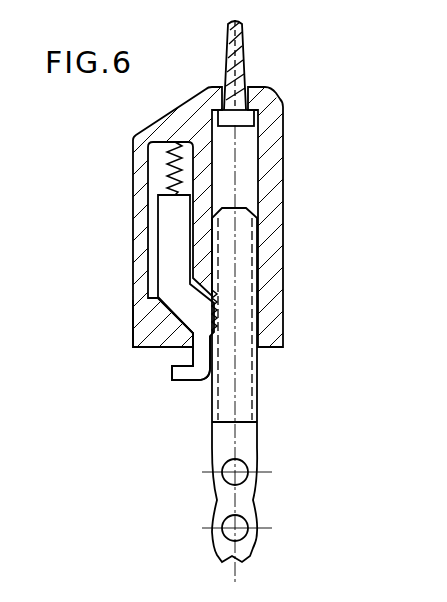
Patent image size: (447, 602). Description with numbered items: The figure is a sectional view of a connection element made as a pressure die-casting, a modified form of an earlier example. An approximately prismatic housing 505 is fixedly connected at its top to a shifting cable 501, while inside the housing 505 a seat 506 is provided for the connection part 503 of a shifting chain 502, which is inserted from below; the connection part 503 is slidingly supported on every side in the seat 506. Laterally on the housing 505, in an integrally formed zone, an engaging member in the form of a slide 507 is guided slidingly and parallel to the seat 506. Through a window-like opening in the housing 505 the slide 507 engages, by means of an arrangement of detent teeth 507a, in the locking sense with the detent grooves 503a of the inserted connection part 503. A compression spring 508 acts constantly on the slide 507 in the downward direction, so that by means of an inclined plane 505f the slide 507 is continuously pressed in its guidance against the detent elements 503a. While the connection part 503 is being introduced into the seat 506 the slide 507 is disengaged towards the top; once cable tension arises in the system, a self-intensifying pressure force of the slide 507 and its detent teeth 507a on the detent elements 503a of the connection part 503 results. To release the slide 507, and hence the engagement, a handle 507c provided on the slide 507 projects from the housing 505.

The shifting cable 501 is at (244, 55).
The shifting chain 502 is at (242, 501).
The connection part 503 is at (245, 382).
The detent grooves 503a is at (213, 403).
The housing 505 is at (272, 115).
The inclined plane 505f is at (137, 347).
The seat 506 is at (250, 170).
The slide 507 is at (177, 257).
The detent teeth 507a is at (212, 310).
The handle 507c is at (172, 372).
The compression spring 508 is at (167, 168).